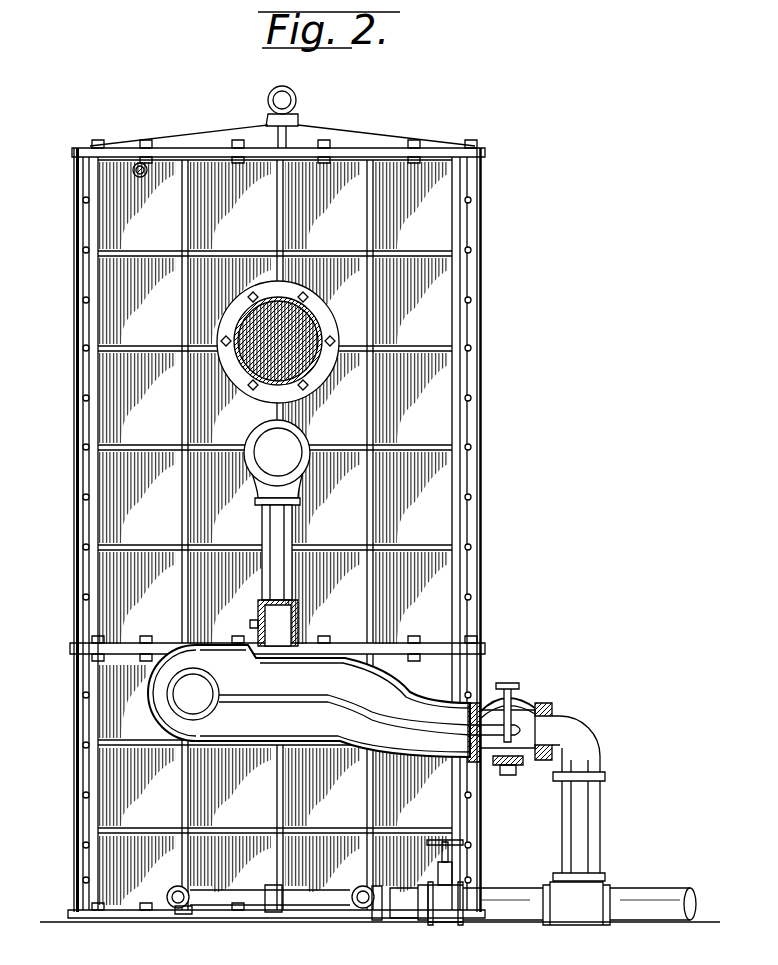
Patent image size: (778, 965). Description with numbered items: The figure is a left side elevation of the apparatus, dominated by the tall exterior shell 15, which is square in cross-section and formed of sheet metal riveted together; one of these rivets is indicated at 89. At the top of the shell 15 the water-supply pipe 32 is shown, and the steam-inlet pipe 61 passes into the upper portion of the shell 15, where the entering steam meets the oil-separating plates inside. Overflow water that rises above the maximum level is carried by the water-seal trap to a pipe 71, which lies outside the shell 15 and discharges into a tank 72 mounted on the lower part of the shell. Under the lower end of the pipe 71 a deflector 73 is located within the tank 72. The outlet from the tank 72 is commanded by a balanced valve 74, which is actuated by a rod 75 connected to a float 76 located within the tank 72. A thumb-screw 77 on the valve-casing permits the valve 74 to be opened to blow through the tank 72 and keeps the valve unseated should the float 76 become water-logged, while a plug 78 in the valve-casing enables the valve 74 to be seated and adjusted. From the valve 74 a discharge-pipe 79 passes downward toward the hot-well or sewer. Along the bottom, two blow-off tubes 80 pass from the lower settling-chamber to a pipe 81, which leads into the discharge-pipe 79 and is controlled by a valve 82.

The exterior shell 15 is at (276, 521).
The water-supply pipe 32 is at (296, 100).
The rivet 89 is at (140, 178).
The steam-inlet pipe 61 is at (312, 316).
The pipe 71 is at (284, 526).
The tank 72 is at (309, 701).
The deflector 73 is at (308, 662).
The float 76 is at (193, 694).
The rod 75 is at (414, 720).
The balanced valve 74 is at (522, 712).
The thumb-screw 77 is at (513, 683).
The plug 78 is at (505, 778).
The discharge-pipe 79 is at (586, 848).
The pipe 81 is at (488, 898).
The blow-off tubes 80 is at (192, 892).
The valve 82 is at (455, 870).